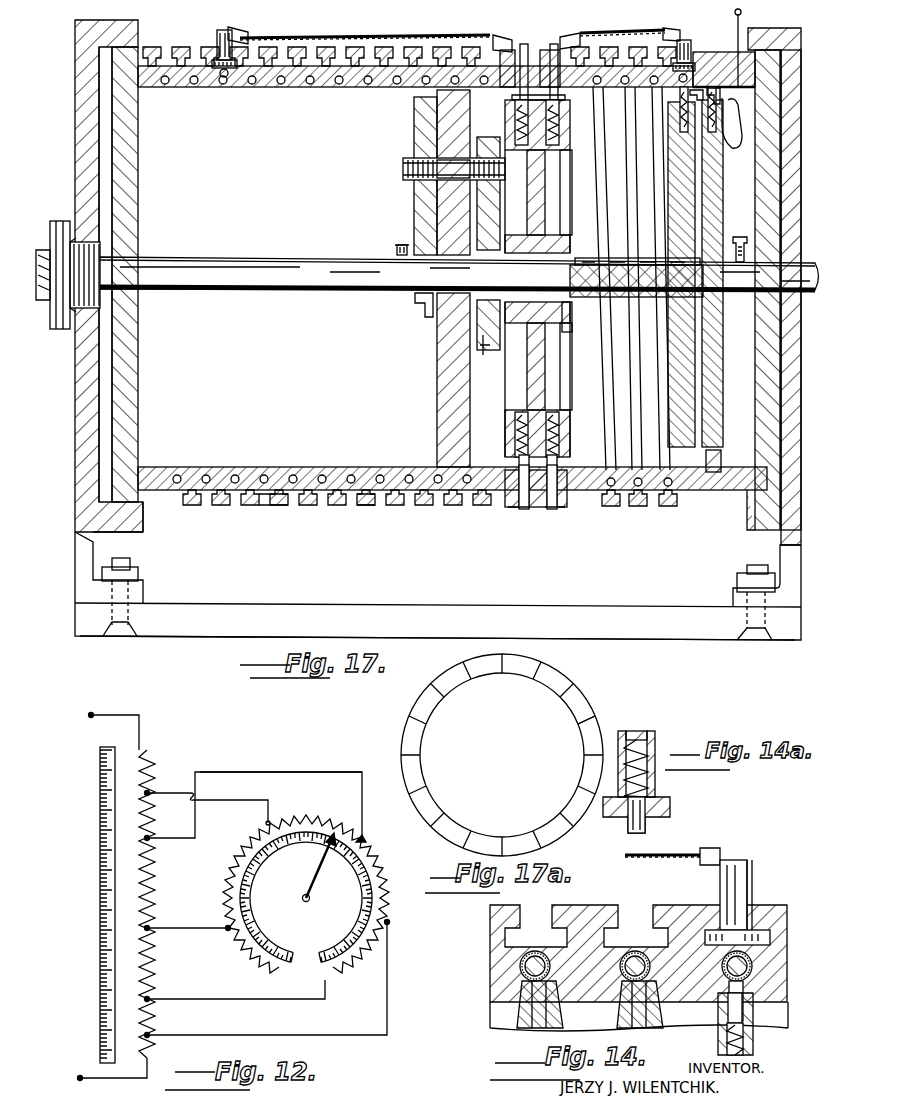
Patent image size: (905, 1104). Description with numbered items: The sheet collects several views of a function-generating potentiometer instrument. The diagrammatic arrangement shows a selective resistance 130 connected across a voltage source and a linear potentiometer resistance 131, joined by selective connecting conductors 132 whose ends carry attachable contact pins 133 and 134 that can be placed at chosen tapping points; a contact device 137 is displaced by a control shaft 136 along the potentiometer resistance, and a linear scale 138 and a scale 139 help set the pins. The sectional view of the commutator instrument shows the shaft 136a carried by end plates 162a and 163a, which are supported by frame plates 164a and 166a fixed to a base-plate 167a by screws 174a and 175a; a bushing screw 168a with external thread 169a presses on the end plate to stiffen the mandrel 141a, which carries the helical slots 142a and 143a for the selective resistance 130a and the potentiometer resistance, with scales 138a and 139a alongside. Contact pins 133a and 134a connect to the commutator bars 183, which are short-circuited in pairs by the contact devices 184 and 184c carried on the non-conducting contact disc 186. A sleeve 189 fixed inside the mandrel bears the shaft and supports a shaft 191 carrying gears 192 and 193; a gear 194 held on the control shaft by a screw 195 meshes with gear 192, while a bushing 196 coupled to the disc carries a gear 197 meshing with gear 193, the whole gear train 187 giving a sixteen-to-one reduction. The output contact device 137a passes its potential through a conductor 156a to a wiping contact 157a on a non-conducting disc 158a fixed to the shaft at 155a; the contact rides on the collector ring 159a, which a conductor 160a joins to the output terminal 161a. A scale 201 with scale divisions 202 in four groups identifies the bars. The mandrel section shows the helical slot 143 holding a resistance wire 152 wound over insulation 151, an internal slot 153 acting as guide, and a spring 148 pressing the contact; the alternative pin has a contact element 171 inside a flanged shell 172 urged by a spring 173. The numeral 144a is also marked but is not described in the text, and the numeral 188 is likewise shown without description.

In FIG. 17, the selective resistance 130a is at (165, 62).
In FIG. 17, the attachable contact pin 133a is at (220, 44).
In FIG. 17, the commutator bar 183 is at (530, 44).
In FIG. 17, the attachable contact pin 134a is at (688, 40).
In FIG. 17, the conductor 160a is at (748, 36).
In FIG. 17, the output terminal 161a is at (742, 12).
In FIG. 17, the frame plate 164a is at (76, 150).
In FIG. 17, the external thread 169a is at (68, 242).
In FIG. 17, the bushing screw 168a is at (56, 331).
In FIG. 17, the control shaft 136a is at (222, 260).
In FIG. 17, the end plate 162a is at (139, 386).
In FIG. 17, the gear train 187 is at (410, 172).
In FIG. 17, the gear 192 is at (403, 168).
In FIG. 17, the shaft 191 is at (420, 205).
In FIG. 17, the screw 195 is at (395, 248).
In FIG. 17, the gear 194 is at (420, 312).
In FIG. 17, the lower support block 188 is at (437, 390).
In FIG. 17, the gear 193 is at (486, 140).
In FIG. 17, the contact device 184 is at (602, 128).
In FIG. 17, the contact device 184c is at (560, 460).
In FIG. 17, the sleeve 189 is at (586, 258).
In FIG. 17, the contact arm 144a is at (572, 310).
In FIG. 17, the bushing 196 is at (566, 336).
In FIG. 17, the contact disc 186 is at (543, 385).
In FIG. 17, the gear 197 is at (486, 352).
In FIG. 17, the output contact device 137a is at (662, 112).
In FIG. 17, the wiping contact 157a is at (720, 97).
In FIG. 17, the conductor 156a is at (735, 148).
In FIG. 17, the non-conducting disc 158a is at (721, 196).
In FIG. 17, the fixing point 155a is at (740, 237).
In FIG. 17, the frame plate 166a is at (796, 348).
In FIG. 17, the end plate 163a is at (768, 385).
In FIG. 17, the collector ring 159a is at (721, 458).
In FIG. 17, the mandrel 141a is at (148, 510).
In FIG. 17, the helical slot 142a is at (270, 508).
In FIG. 17, the linear scale 138a is at (378, 508).
In FIG. 17, the potentiometer resistance 131 is at (530, 526).
In FIG. 12, the potentiometer resistance 131 is at (372, 846).
In FIG. 17, the scale 139a is at (611, 508).
In FIG. 17, the helical slot 143a is at (640, 508).
In FIG. 17, the screw 174a is at (138, 576).
In FIG. 17, the screw 175a is at (737, 576).
In FIG. 17, the base-plate 167a is at (314, 612).
In FIG. 12, the selective resistance 130 is at (150, 756).
In FIG. 12, the selective connecting conductor 132 is at (298, 770).
In FIG. 14, the selective connecting conductor 132 is at (670, 866).
In FIG. 12, the attachable contact pin 133 is at (150, 840).
In FIG. 12, the attachable contact pin 134 is at (364, 834).
In FIG. 14, the attachable contact pin 134 is at (754, 900).
In FIG. 12, the scale 139 is at (254, 884).
In FIG. 12, the contact device 137 is at (318, 875).
In FIG. 14, the contact device 137 is at (745, 1012).
In FIG. 12, the control shaft 136 is at (306, 904).
In FIG. 12, the linear scale 138 is at (100, 960).
In FIG. 17A, the scale 201 is at (596, 688).
In FIG. 17A, the scale division 202 is at (597, 728).
In FIG. 14A, the spring 173 is at (655, 746).
In FIG. 14A, the flanged shell 172 is at (655, 778).
In FIG. 14A, the contact element 171 is at (646, 828).
In FIG. 14, the helical slot 143 is at (640, 925).
In FIG. 14, the insulation 151 is at (520, 970).
In FIG. 14, the resistance wire 152 is at (533, 1030).
In FIG. 14, the internal slot 153 is at (645, 1030).
In FIG. 14, the spring 148 is at (752, 1044).